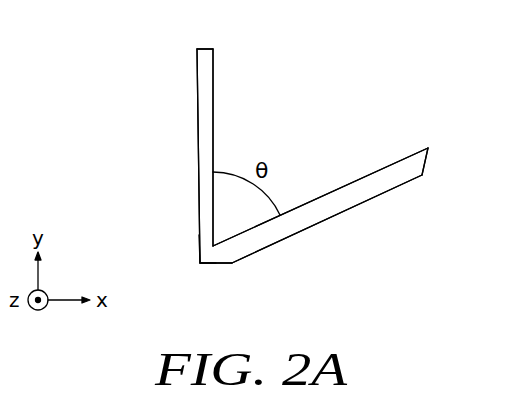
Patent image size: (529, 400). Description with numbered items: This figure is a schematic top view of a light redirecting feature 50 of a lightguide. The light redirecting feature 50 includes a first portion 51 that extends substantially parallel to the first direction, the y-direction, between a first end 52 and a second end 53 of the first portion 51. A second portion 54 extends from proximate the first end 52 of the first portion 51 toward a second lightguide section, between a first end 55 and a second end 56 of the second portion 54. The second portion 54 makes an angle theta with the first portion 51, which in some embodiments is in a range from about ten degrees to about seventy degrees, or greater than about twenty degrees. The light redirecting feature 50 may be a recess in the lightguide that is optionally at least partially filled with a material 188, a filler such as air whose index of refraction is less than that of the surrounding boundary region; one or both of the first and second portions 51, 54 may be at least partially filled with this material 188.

The light redirecting feature 50 is at (104, 41).
The first portion 51 is at (200, 141).
The first end of the first portion 52 is at (210, 267).
The second end of the first portion 53 is at (203, 48).
The second portion 54 is at (343, 202).
The first end of the second portion 55 is at (220, 267).
The second end of the second portion 56 is at (428, 162).
The material 188 is at (385, 178).